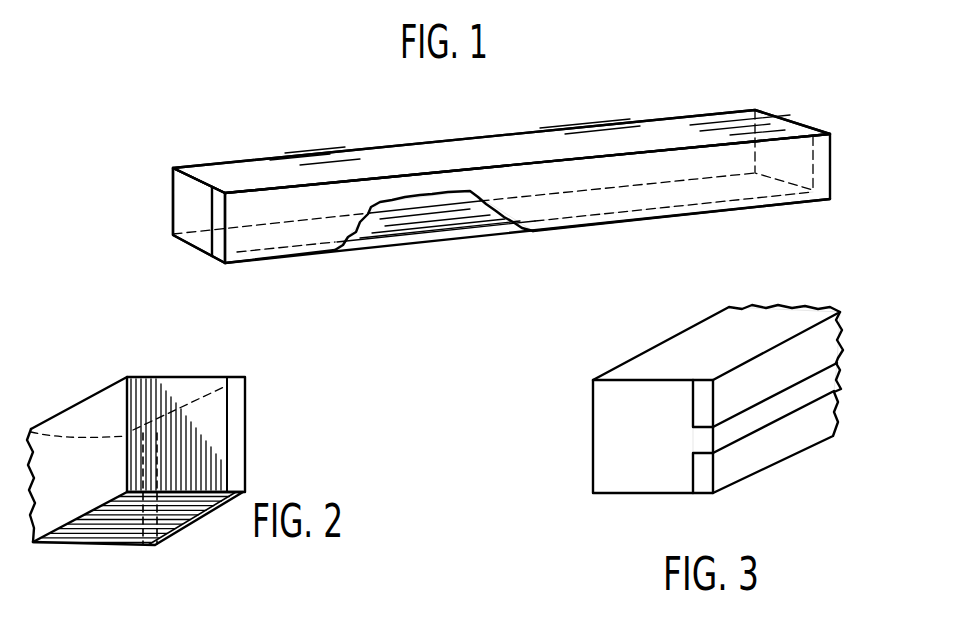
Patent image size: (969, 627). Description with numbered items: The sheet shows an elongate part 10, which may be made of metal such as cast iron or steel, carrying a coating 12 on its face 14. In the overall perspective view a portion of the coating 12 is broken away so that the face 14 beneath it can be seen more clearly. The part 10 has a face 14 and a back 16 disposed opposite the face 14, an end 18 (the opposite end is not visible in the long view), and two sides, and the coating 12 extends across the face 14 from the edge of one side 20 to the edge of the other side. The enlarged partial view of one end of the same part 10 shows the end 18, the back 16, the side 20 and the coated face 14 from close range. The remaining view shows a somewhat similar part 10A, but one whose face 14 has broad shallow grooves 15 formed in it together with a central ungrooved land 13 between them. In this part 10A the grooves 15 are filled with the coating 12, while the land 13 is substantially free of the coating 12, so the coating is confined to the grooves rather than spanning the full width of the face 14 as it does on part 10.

In FIG. 1, the elongate part 10 is at (515, 245).
In FIG. 3, the part 10A is at (578, 414).
In FIG. 1, the coating 12 is at (580, 198).
In FIG. 2, the coating 12 is at (247, 428).
In FIG. 3, the coating 12 is at (845, 340).
In FIG. 3, the land 13 is at (845, 376).
In FIG. 1, the face 14 is at (393, 228).
In FIG. 2, the face 14 is at (187, 456).
In FIG. 3, the face 14 is at (743, 428).
In FIG. 3, the grooves 15 is at (693, 470).
In FIG. 1, the back 16 is at (303, 197).
In FIG. 2, the back 16 is at (75, 478).
In FIG. 3, the back 16 is at (593, 443).
In FIG. 1, the end 18 is at (193, 212).
In FIG. 2, the end 18 is at (172, 418).
In FIG. 3, the end 18 is at (630, 457).
In FIG. 1, the side 20 is at (493, 148).
In FIG. 2, the side 20 is at (110, 416).
In FIG. 3, the side 20 is at (757, 327).